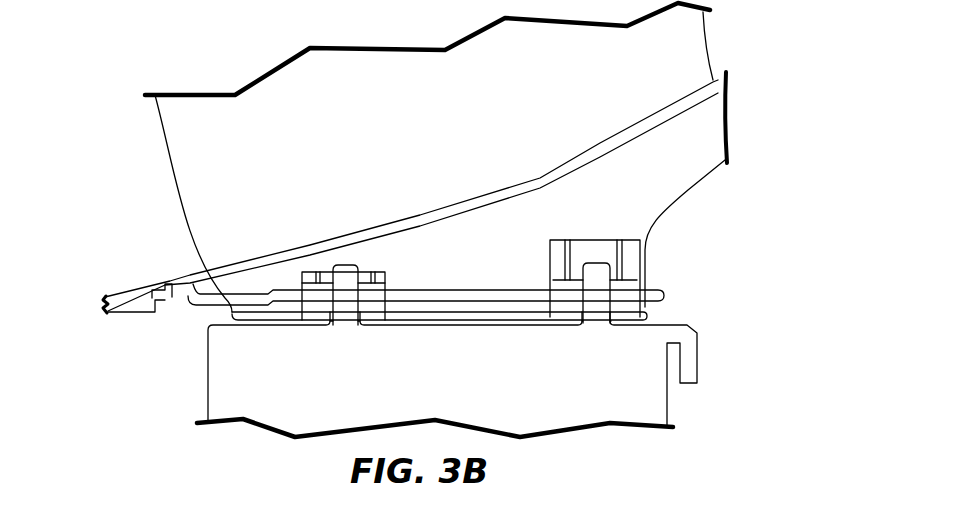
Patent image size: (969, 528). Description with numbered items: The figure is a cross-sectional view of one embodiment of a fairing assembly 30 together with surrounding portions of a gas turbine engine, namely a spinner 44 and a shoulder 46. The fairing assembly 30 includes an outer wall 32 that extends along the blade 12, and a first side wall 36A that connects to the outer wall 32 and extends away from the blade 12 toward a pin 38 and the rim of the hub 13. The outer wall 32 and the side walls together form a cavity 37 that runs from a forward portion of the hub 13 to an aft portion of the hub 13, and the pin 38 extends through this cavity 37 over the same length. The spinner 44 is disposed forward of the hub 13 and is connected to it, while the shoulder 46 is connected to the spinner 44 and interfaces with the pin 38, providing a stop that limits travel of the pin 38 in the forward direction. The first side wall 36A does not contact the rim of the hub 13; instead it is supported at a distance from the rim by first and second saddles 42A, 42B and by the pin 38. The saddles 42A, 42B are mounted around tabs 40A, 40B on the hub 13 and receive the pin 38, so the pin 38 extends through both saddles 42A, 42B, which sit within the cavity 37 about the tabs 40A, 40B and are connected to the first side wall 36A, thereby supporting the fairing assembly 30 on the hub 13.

The blade 12 is at (217, 188).
The hub 13 is at (638, 405).
The fairing assembly 30 is at (579, 131).
The outer wall 32 is at (718, 80).
The first side wall 36A is at (685, 165).
The cavity 37 is at (693, 132).
The pin 38 is at (492, 297).
The first tab 40A is at (345, 313).
The second tab 40B is at (598, 313).
The first saddle 42A is at (370, 287).
The second saddle 42B is at (628, 285).
The spinner 44 is at (132, 298).
The shoulder 46 is at (163, 288).